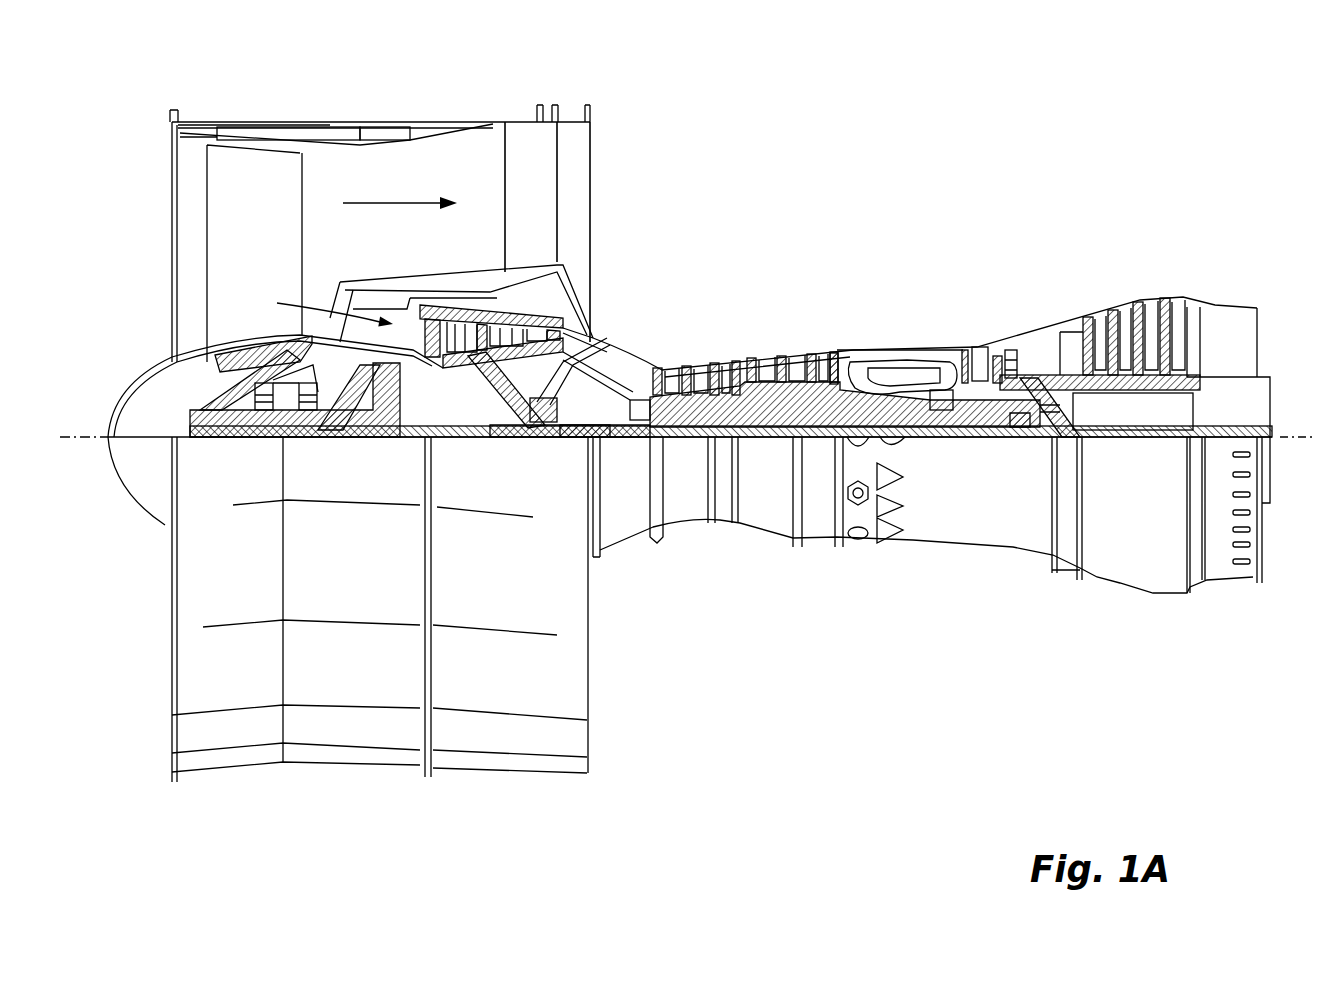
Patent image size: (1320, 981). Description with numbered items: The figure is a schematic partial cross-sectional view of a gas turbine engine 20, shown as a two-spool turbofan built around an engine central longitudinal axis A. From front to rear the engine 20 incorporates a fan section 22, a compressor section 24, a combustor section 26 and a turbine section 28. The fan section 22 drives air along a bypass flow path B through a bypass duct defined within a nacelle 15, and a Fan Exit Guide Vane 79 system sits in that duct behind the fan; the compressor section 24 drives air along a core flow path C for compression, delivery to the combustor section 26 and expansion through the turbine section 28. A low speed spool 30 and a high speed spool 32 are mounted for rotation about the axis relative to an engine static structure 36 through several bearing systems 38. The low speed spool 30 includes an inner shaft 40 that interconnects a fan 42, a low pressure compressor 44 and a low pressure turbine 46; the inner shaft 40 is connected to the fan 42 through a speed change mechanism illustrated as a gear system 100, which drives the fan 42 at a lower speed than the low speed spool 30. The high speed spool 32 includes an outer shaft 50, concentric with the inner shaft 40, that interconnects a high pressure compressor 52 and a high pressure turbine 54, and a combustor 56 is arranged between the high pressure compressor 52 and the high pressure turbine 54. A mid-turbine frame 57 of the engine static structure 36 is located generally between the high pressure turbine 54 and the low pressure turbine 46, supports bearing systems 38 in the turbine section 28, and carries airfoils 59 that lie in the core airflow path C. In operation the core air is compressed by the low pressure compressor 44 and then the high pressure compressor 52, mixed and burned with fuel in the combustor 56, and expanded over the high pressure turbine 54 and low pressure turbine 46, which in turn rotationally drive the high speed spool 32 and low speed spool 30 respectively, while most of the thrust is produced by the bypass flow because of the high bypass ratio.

The nacelle 15 is at (381, 113).
The gas turbine engine 20 is at (856, 183).
The fan section 22 is at (316, 106).
The compressor section 24 is at (650, 338).
The combustor section 26 is at (873, 333).
The turbine section 28 is at (1082, 300).
The low speed spool 30 is at (767, 443).
The high speed spool 32 is at (806, 377).
The engine static structure 36 is at (815, 540).
The bearing systems 38 is at (543, 443).
The inner shaft 40 is at (610, 447).
The fan 42 is at (231, 243).
The low pressure compressor 44 is at (490, 294).
The low pressure turbine 46 is at (1127, 327).
The outer shaft 50 is at (927, 443).
The high pressure compressor 52 is at (728, 360).
The high pressure turbine 54 is at (983, 347).
The combustor 56 is at (902, 374).
The mid-turbine frame 57 is at (1040, 357).
The airfoils 59 is at (1010, 372).
The Fan Exit Guide Vane 79 is at (543, 200).
The gear system 100 is at (386, 446).